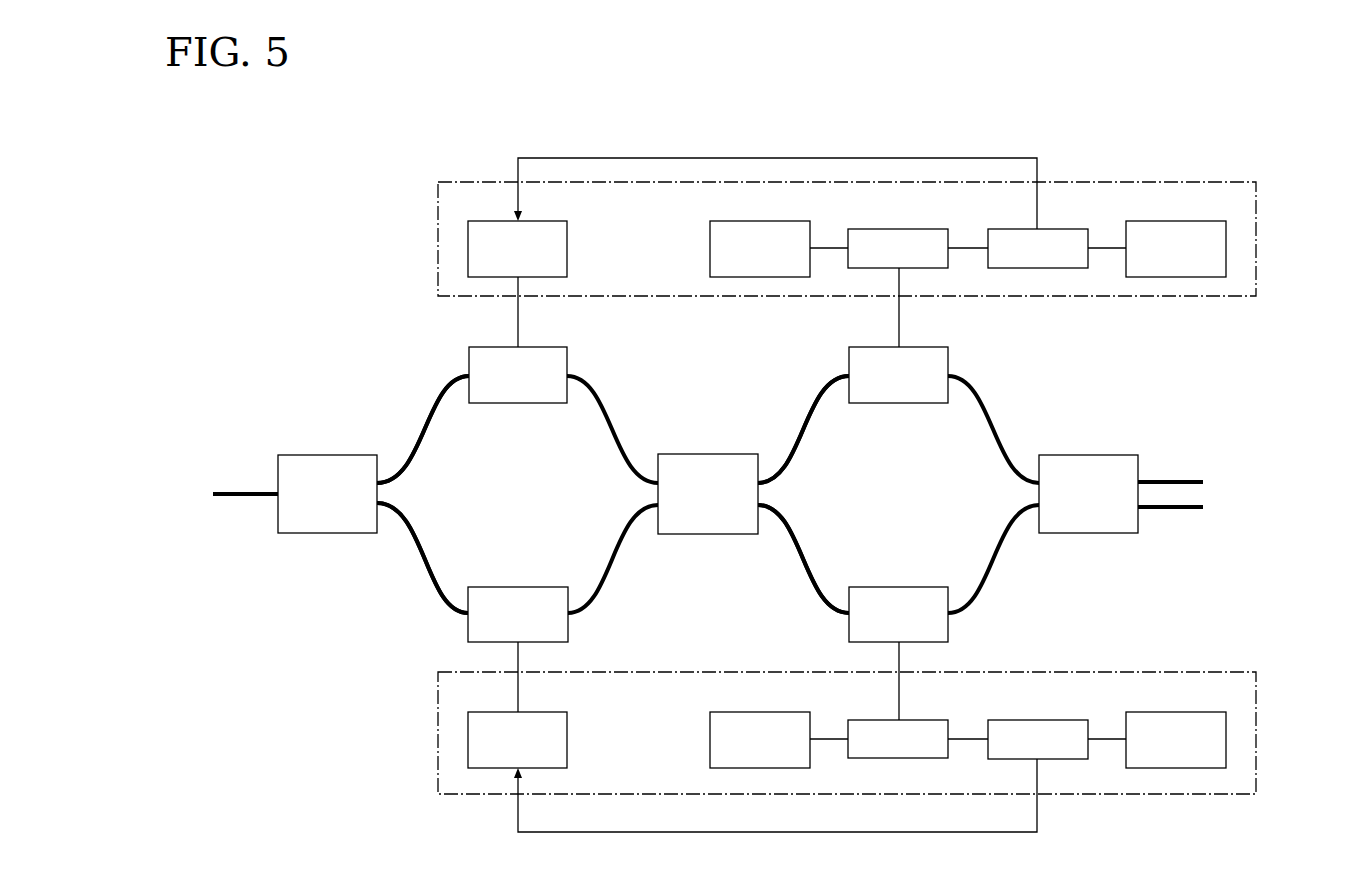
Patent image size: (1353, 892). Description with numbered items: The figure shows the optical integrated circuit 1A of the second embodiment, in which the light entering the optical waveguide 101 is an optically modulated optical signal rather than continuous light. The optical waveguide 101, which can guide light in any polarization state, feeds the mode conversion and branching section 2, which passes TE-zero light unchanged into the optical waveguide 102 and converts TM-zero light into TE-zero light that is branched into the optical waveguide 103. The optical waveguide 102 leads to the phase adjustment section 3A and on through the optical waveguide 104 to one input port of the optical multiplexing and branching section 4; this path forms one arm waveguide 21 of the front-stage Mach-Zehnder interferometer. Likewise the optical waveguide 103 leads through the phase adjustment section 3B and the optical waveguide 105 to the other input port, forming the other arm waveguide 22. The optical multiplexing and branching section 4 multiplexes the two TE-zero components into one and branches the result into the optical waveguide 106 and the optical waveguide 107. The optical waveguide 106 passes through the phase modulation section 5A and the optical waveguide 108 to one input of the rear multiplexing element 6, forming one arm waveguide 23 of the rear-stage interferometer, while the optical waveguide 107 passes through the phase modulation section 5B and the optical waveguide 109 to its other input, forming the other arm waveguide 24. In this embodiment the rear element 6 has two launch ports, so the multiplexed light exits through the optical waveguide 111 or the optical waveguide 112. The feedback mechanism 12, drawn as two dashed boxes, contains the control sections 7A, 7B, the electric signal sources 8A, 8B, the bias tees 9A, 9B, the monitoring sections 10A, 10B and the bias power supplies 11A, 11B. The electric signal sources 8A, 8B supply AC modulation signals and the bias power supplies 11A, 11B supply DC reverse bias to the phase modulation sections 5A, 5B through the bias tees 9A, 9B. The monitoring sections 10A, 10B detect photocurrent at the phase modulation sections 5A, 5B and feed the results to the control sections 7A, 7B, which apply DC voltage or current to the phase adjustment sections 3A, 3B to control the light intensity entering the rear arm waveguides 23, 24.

The optical integrated circuit 1A is at (293, 204).
The mode conversion and branching section 2 is at (330, 455).
The arm waveguide 21 is at (425, 379).
The arm waveguide 22 is at (428, 602).
The phase adjustment section 3A is at (540, 347).
The phase adjustment section 3B is at (540, 587).
The optical multiplexing and branching section 4 is at (708, 455).
The arm waveguide 23 is at (805, 379).
The arm waveguide 24 is at (805, 602).
The phase modulation section 5A is at (920, 347).
The phase modulation section 5B is at (920, 587).
The optical multiplexing section 6 is at (1088, 455).
The control section 7A is at (540, 221).
The control section 7B is at (540, 712).
The electric signal source 8A is at (760, 221).
The electric signal source 8B is at (760, 712).
The bias tee 9A is at (920, 229).
The bias tee 9B is at (920, 720).
The monitoring section 10A is at (1062, 229).
The monitoring section 10B is at (1042, 720).
The bias power supply 11A is at (1180, 221).
The bias power supply 11B is at (1180, 712).
The feedback mechanism 12 is at (1258, 237).
The optical waveguide 101 is at (240, 490).
The optical waveguide 102 is at (420, 433).
The optical waveguide 103 is at (418, 556).
The optical waveguide 104 is at (618, 432).
The optical waveguide 105 is at (618, 555).
The optical waveguide 106 is at (800, 432).
The optical waveguide 107 is at (800, 556).
The optical waveguide 108 is at (1000, 432).
The optical waveguide 109 is at (1000, 557).
The optical waveguide 111 is at (1172, 480).
The optical waveguide 112 is at (1170, 510).